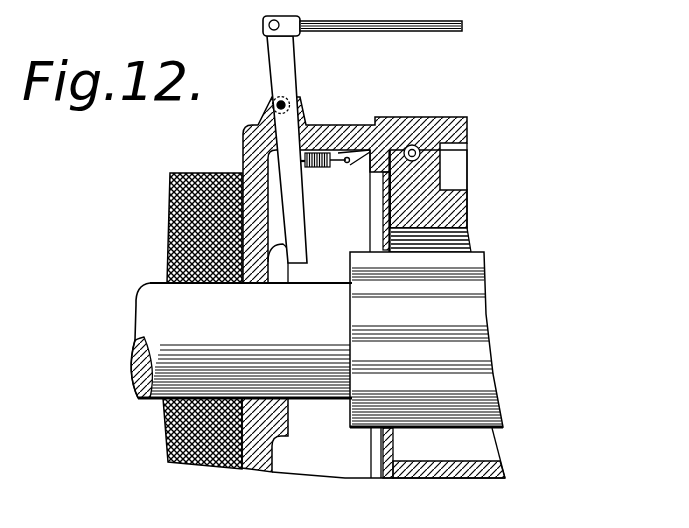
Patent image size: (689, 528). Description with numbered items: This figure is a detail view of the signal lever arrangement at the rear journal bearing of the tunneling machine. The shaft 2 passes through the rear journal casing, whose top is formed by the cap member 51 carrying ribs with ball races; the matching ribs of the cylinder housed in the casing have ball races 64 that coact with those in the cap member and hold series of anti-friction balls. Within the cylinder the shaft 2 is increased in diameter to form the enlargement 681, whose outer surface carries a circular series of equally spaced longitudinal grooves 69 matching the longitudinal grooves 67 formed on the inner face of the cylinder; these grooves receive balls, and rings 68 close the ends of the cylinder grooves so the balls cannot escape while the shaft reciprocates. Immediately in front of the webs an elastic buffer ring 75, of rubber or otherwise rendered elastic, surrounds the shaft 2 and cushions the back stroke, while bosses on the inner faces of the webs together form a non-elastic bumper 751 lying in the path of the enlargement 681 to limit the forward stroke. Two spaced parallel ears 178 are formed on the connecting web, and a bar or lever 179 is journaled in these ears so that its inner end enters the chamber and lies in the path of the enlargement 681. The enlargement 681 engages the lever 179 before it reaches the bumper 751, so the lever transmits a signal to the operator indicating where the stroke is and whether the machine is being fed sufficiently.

The shaft 2 is at (241, 340).
The cap member 51 is at (388, 126).
The ball races 64 is at (416, 147).
The longitudinal grooves 67 is at (468, 243).
The rings 68 is at (383, 217).
The enlargement of the shaft 681 is at (468, 262).
The longitudinal grooves 69 is at (457, 352).
The buffer ring 75 is at (178, 260).
The non-elastic bumper 751 is at (288, 433).
The ears 178 is at (305, 110).
The lever 179 is at (281, 50).